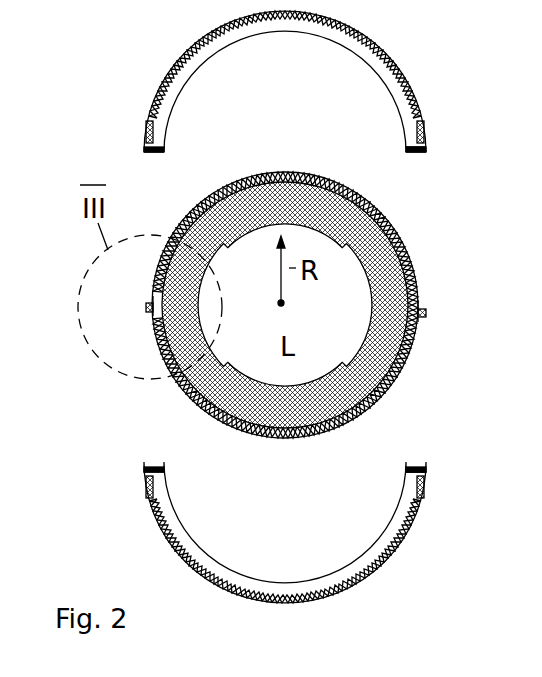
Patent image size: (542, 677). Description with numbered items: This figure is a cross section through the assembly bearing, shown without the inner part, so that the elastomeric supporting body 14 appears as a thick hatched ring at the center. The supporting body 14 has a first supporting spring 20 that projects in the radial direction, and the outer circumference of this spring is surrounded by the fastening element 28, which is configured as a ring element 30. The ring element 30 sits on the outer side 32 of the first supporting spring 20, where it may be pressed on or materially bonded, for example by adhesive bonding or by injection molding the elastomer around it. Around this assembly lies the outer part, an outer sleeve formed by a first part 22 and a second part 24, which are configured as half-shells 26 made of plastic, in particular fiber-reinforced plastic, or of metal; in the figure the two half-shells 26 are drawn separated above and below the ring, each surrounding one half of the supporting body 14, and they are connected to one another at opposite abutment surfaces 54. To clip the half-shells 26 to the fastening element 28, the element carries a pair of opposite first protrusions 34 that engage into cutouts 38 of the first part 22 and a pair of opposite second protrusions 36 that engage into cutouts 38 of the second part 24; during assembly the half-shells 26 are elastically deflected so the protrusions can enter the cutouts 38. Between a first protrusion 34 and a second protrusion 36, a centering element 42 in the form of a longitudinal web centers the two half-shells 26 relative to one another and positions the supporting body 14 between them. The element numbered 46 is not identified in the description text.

The elastomeric supporting body 14 is at (393, 352).
The first supporting spring 20 is at (387, 258).
The first part 22 is at (408, 90).
The second part 24 is at (406, 520).
The half-shells 26 is at (175, 72).
The fastening element 28 is at (264, 182).
The ring element 30 is at (215, 200).
The outer side 32 is at (377, 215).
The first protrusions 34 is at (152, 275).
The second protrusions 36 is at (153, 335).
The cutouts 38 is at (150, 118).
The centering element 42 is at (145, 307).
The end cap 46 is at (143, 151).
The abutment surfaces 54 is at (404, 152).